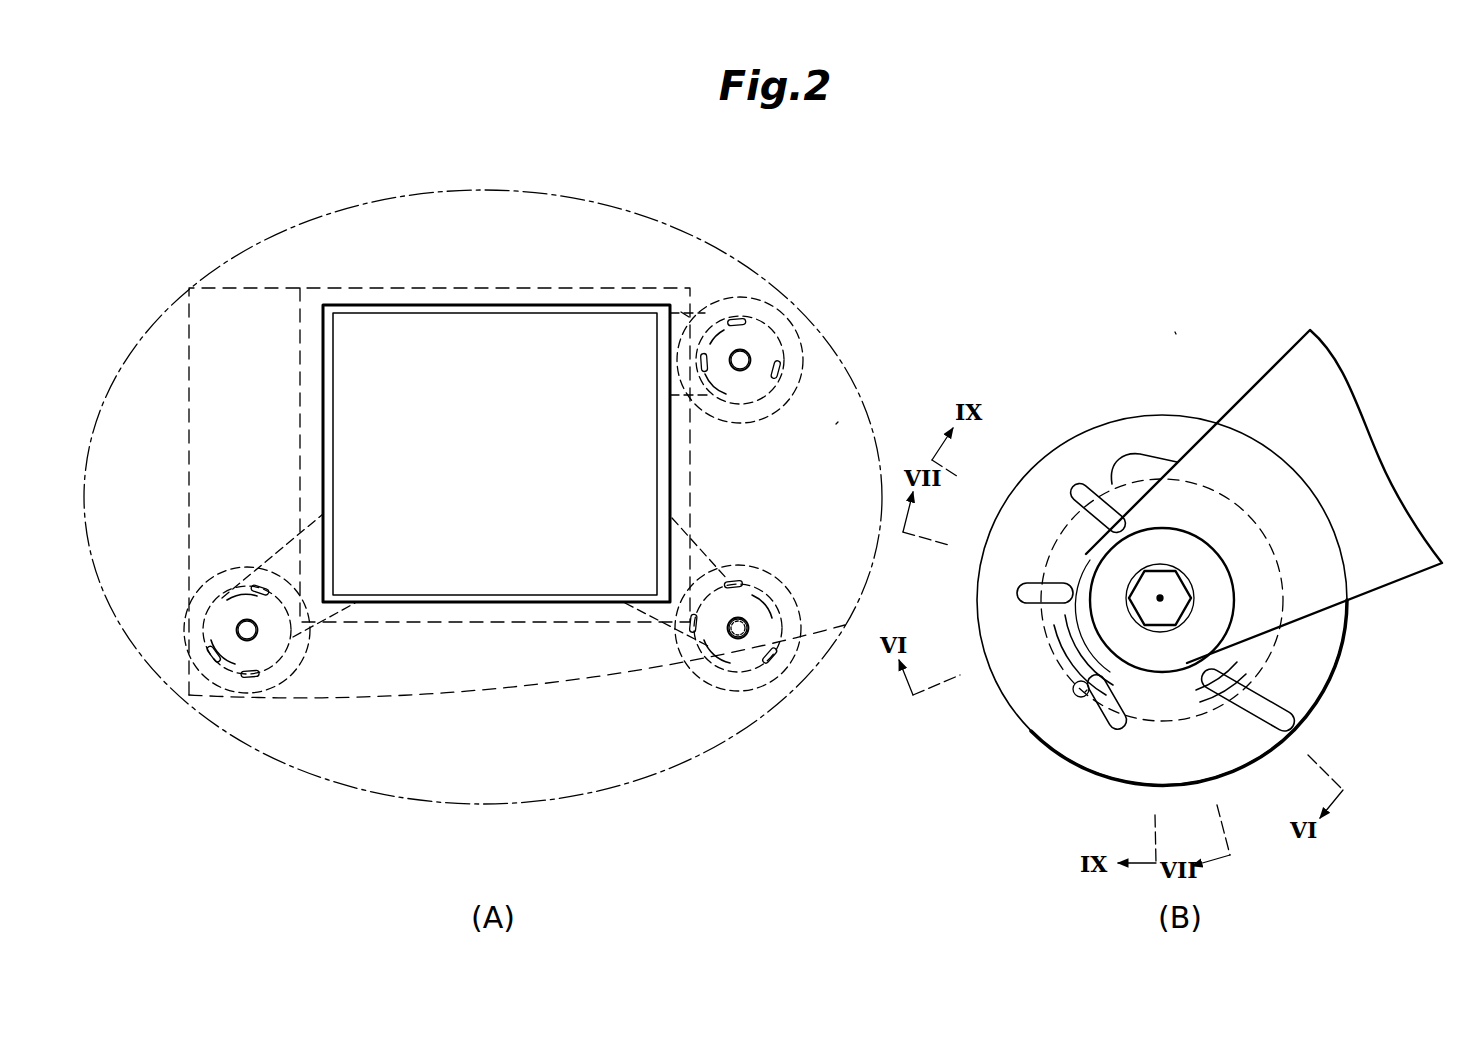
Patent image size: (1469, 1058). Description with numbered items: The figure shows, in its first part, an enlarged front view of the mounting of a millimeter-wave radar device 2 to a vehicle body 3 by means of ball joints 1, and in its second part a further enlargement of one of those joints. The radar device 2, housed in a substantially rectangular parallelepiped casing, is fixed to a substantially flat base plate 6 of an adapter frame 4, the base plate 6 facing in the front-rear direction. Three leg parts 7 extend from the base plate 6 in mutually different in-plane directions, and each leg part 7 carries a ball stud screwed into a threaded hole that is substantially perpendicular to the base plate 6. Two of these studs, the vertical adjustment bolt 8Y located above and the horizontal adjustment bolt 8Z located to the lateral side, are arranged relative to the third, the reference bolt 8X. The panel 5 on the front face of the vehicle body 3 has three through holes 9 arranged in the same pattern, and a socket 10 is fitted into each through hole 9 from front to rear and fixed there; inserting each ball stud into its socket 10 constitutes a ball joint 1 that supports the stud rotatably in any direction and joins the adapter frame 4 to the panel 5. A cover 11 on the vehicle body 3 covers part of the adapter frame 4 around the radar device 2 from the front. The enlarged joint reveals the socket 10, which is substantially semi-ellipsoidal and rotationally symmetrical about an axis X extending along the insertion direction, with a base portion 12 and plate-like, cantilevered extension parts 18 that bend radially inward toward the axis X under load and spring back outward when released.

The ball joint 1 is at (820, 356).
The millimeter-wave radar device 2 is at (403, 310).
The vehicle body 3 is at (614, 228).
The adapter frame 4 is at (681, 312).
The panel 5 is at (838, 422).
The base plate 6 is at (515, 305).
The leg part 7 is at (742, 300).
The vertical adjustment bolt 8Y is at (750, 350).
The horizontal adjustment bolt 8Z is at (247, 640).
The reference bolt 8X is at (743, 634).
The through hole 9 is at (760, 396).
The socket 10 is at (1228, 750).
The cover 11 is at (213, 336).
The base portion 12 is at (1030, 705).
The extension part 18 is at (1141, 480).
The axis X is at (1162, 596).